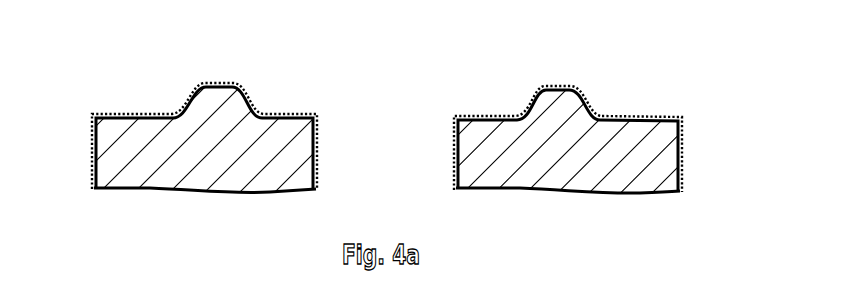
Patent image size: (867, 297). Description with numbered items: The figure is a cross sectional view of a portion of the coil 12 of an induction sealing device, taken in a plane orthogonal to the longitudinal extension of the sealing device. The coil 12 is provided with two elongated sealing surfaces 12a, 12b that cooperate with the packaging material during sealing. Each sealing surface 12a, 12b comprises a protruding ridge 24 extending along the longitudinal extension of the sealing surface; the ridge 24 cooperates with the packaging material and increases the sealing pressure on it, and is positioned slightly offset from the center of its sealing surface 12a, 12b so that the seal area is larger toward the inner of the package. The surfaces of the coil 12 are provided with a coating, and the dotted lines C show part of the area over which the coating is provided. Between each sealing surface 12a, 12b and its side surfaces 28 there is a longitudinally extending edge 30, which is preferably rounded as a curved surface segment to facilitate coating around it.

The coil 12 is at (294, 91).
The sealing surface 12a is at (171, 112).
The sealing surface 12b is at (503, 113).
The protruding ridge 24 is at (235, 76).
The side surface 28 is at (96, 160).
The edge 30 is at (96, 118).
The dotted lines C is at (612, 116).